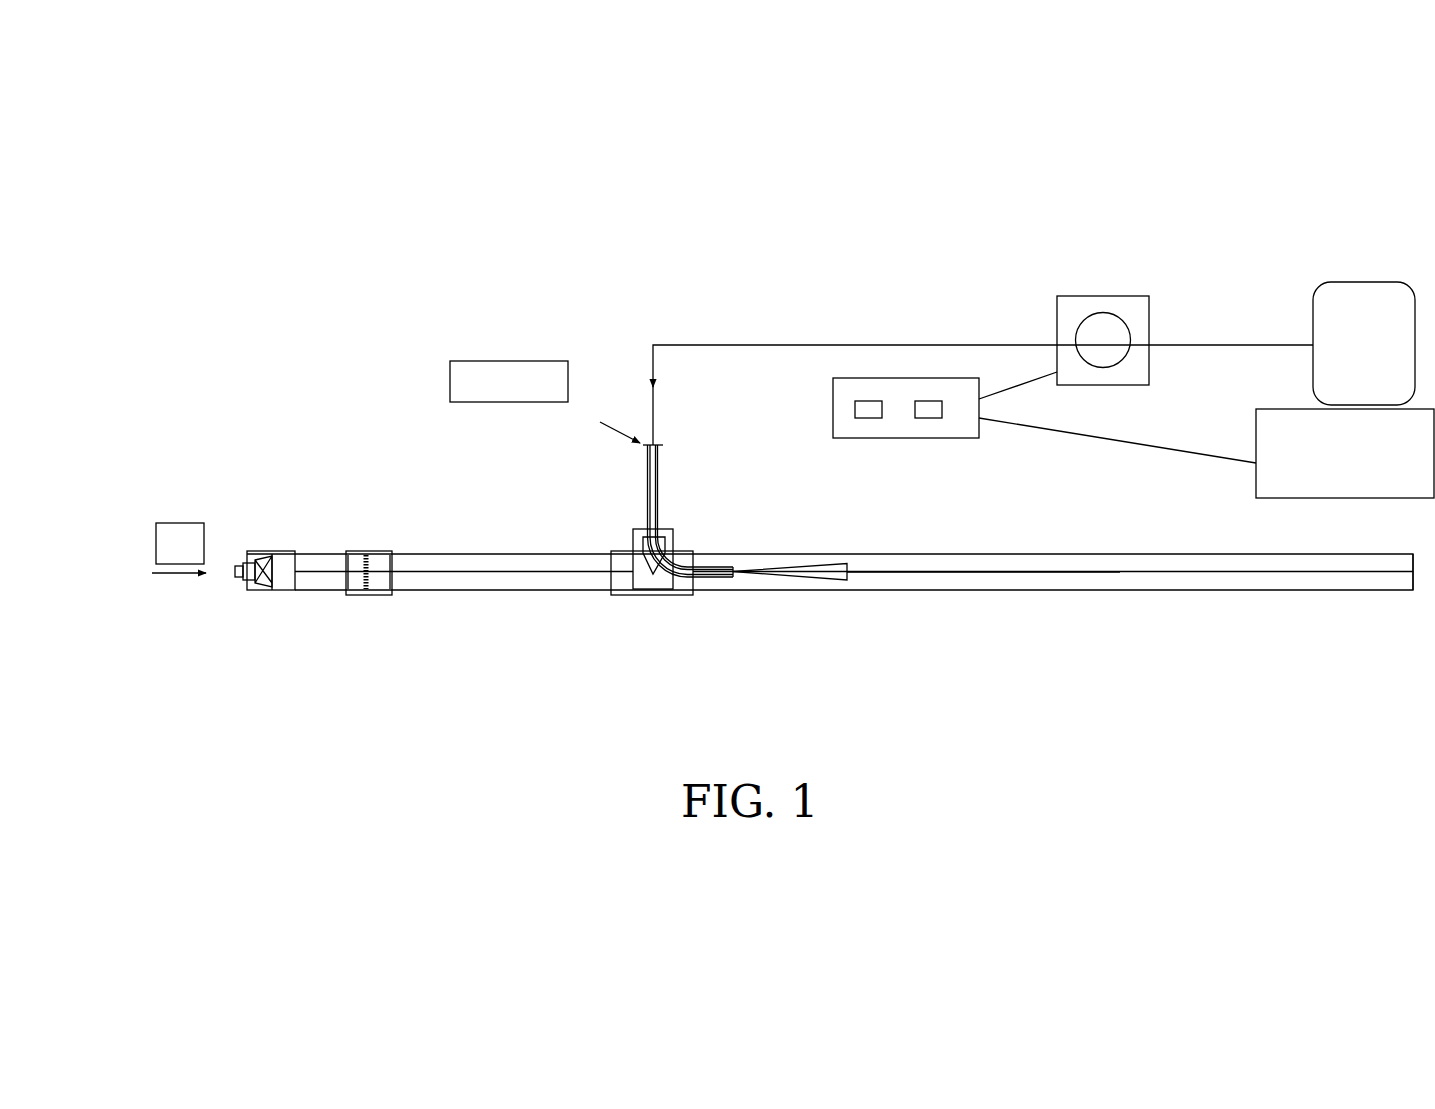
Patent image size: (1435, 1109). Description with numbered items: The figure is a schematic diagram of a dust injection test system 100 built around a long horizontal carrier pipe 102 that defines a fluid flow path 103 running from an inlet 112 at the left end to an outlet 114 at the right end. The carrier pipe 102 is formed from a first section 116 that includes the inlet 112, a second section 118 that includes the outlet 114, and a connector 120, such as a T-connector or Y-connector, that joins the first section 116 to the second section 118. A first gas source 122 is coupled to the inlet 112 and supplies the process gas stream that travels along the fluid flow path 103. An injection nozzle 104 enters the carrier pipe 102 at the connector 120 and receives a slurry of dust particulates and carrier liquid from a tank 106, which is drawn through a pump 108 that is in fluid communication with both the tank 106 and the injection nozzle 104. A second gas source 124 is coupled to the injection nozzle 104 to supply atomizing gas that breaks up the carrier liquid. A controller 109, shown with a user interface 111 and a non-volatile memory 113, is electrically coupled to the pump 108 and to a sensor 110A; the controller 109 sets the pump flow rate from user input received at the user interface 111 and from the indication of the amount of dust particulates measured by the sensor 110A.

The dust injection test system 100 is at (360, 311).
The carrier pipe 102 is at (558, 622).
The fluid flow path 103 is at (364, 622).
The injection nozzle 104 is at (732, 568).
The tank 106 is at (1342, 282).
The pump 108 is at (1103, 296).
The controller 109 is at (833, 419).
The sensor 110A is at (1256, 495).
The user interface 111 is at (863, 422).
The inlet 112 is at (267, 551).
The non-volatile memory 113 is at (927, 422).
The outlet 114 is at (1402, 586).
The first section 116 is at (527, 557).
The second section 118 is at (997, 554).
The connector 120 is at (631, 557).
The first gas source 122 is at (179, 523).
The second gas source 124 is at (508, 361).